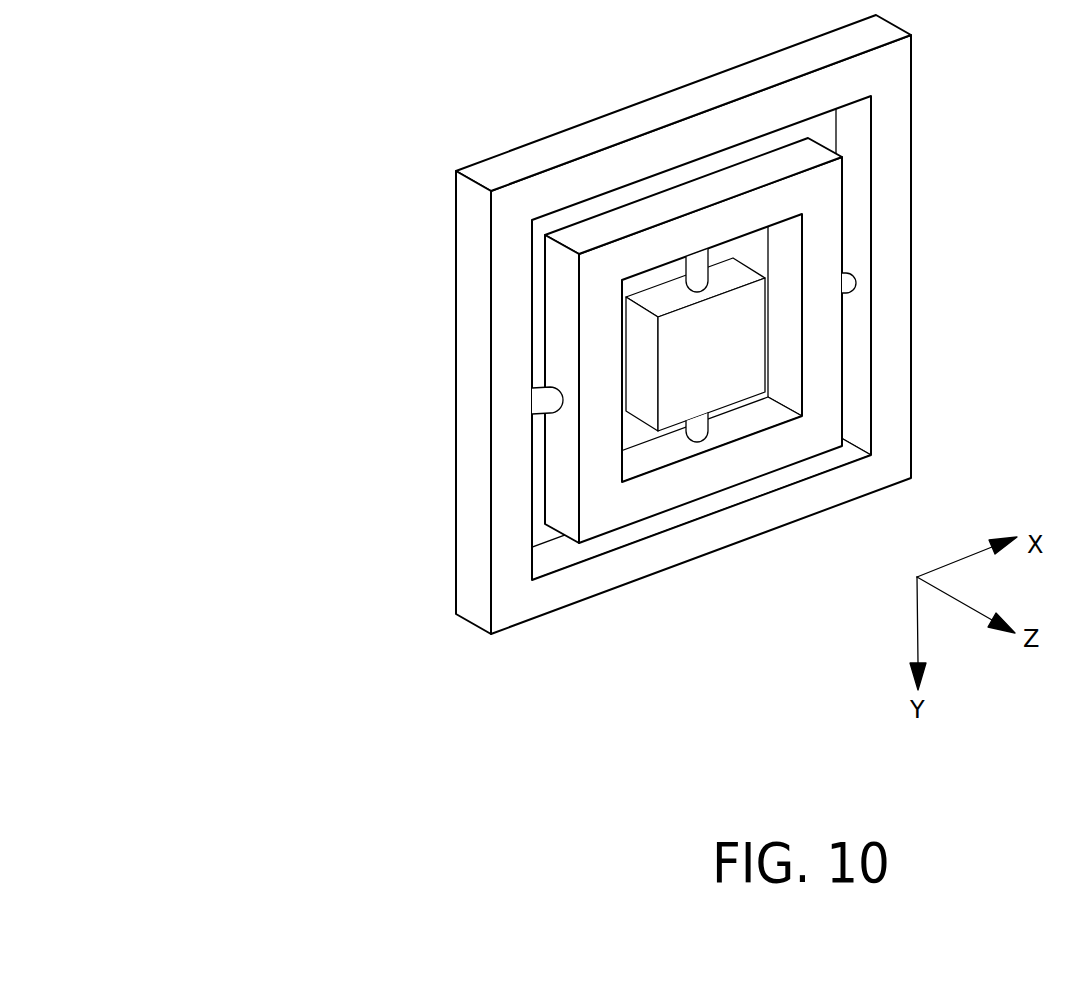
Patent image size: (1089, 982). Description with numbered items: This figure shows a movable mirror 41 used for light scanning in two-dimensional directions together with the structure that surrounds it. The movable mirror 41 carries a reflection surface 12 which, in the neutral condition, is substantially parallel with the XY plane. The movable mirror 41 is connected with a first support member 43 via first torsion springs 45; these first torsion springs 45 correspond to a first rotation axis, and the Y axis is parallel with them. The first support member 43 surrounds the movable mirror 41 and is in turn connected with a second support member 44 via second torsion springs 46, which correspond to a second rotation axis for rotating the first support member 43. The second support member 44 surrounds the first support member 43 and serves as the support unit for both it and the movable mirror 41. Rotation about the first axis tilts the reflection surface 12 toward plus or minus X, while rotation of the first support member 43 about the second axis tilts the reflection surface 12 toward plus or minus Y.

The reflection surface 12 is at (748, 345).
The movable mirror 41 is at (656, 296).
The first support member 43 is at (831, 231).
The second support member 44 is at (884, 92).
The first torsion springs 45 is at (698, 433).
The second torsion springs 46 is at (542, 403).